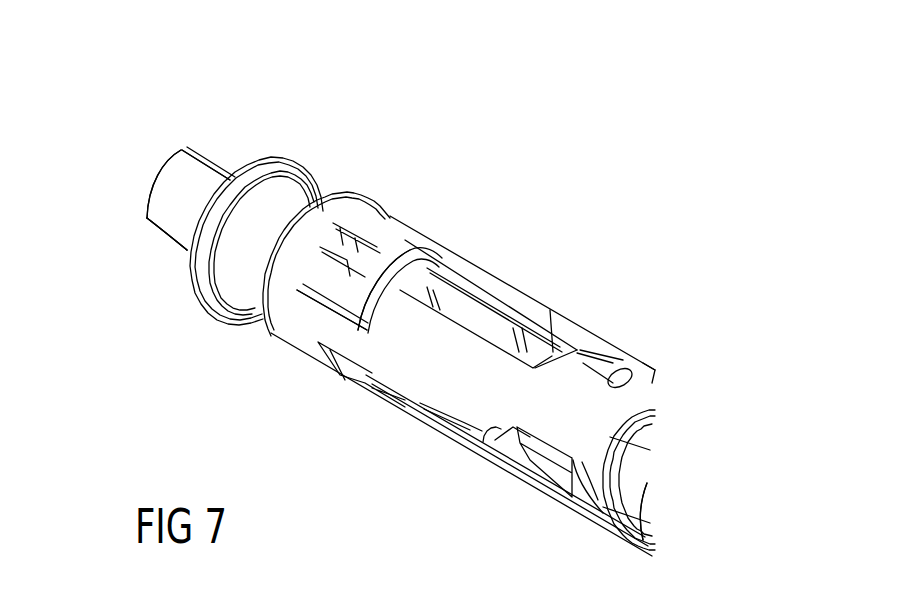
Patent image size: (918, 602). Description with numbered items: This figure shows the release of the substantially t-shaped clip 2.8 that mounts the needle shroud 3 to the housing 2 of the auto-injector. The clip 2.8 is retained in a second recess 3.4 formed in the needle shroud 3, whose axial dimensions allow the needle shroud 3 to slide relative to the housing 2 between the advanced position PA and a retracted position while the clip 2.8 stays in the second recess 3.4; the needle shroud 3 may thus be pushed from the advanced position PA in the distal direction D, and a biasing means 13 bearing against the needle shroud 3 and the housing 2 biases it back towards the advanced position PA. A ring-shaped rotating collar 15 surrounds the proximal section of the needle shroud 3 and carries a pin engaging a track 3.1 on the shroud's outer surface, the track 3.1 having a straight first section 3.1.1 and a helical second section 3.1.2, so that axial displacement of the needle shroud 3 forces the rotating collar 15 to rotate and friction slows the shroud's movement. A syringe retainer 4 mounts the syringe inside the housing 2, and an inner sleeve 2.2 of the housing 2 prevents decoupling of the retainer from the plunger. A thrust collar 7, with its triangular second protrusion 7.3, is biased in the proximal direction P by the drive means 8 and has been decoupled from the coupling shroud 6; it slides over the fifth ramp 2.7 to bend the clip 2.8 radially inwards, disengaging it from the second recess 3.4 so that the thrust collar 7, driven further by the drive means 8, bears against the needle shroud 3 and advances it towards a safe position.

The track 3.1 is at (183, 150).
The straight first section 3.1.1 is at (185, 137).
The helical second section 3.1.2 is at (278, 192).
The rotating collar 15 is at (277, 150).
The needle shroud 3 is at (343, 213).
The second recess 3.4 is at (352, 233).
The fifth ramp 2.7 is at (305, 287).
The thrust collar 7 is at (415, 250).
The inner sleeve 2.2 is at (432, 266).
The second protrusion 7.3 is at (357, 282).
The housing 2 is at (553, 327).
The coupling shroud 6 is at (593, 350).
The drive means 8 is at (643, 385).
The biasing means 13 is at (633, 460).
The syringe retainer 4 is at (290, 298).
The clip 2.8 is at (258, 305).
The proximal direction P is at (185, 160).
The advanced position PA is at (147, 220).
The distal direction D is at (678, 502).